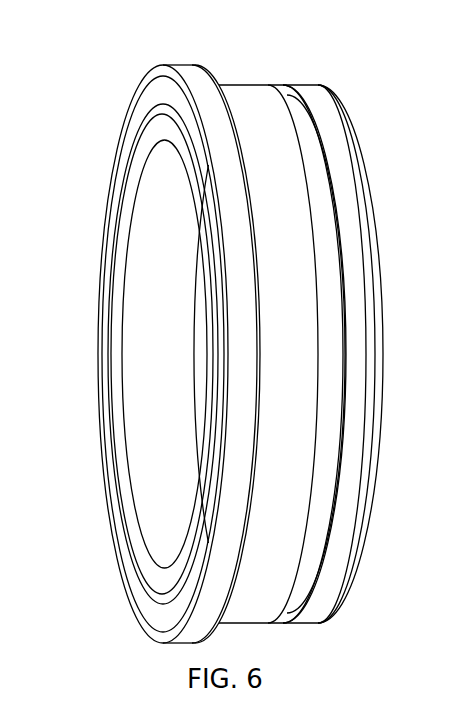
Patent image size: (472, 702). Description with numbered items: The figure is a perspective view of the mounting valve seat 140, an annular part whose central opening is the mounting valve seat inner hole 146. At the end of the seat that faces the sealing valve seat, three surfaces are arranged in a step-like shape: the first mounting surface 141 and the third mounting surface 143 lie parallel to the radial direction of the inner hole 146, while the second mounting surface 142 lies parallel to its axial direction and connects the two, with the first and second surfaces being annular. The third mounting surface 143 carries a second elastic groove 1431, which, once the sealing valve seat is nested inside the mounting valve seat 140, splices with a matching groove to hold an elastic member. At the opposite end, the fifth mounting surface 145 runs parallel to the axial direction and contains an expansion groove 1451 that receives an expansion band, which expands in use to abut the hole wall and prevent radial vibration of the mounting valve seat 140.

The mounting valve seat 140 is at (281, 47).
The first mounting surface 141 is at (200, 338).
The second mounting surface 142 is at (158, 213).
The third mounting surface 143 is at (140, 87).
The second elastic groove 1431 is at (160, 614).
The fifth mounting surface 145 is at (284, 205).
The expansion groove 1451 is at (307, 577).
The mounting valve seat inner hole 146 is at (213, 374).